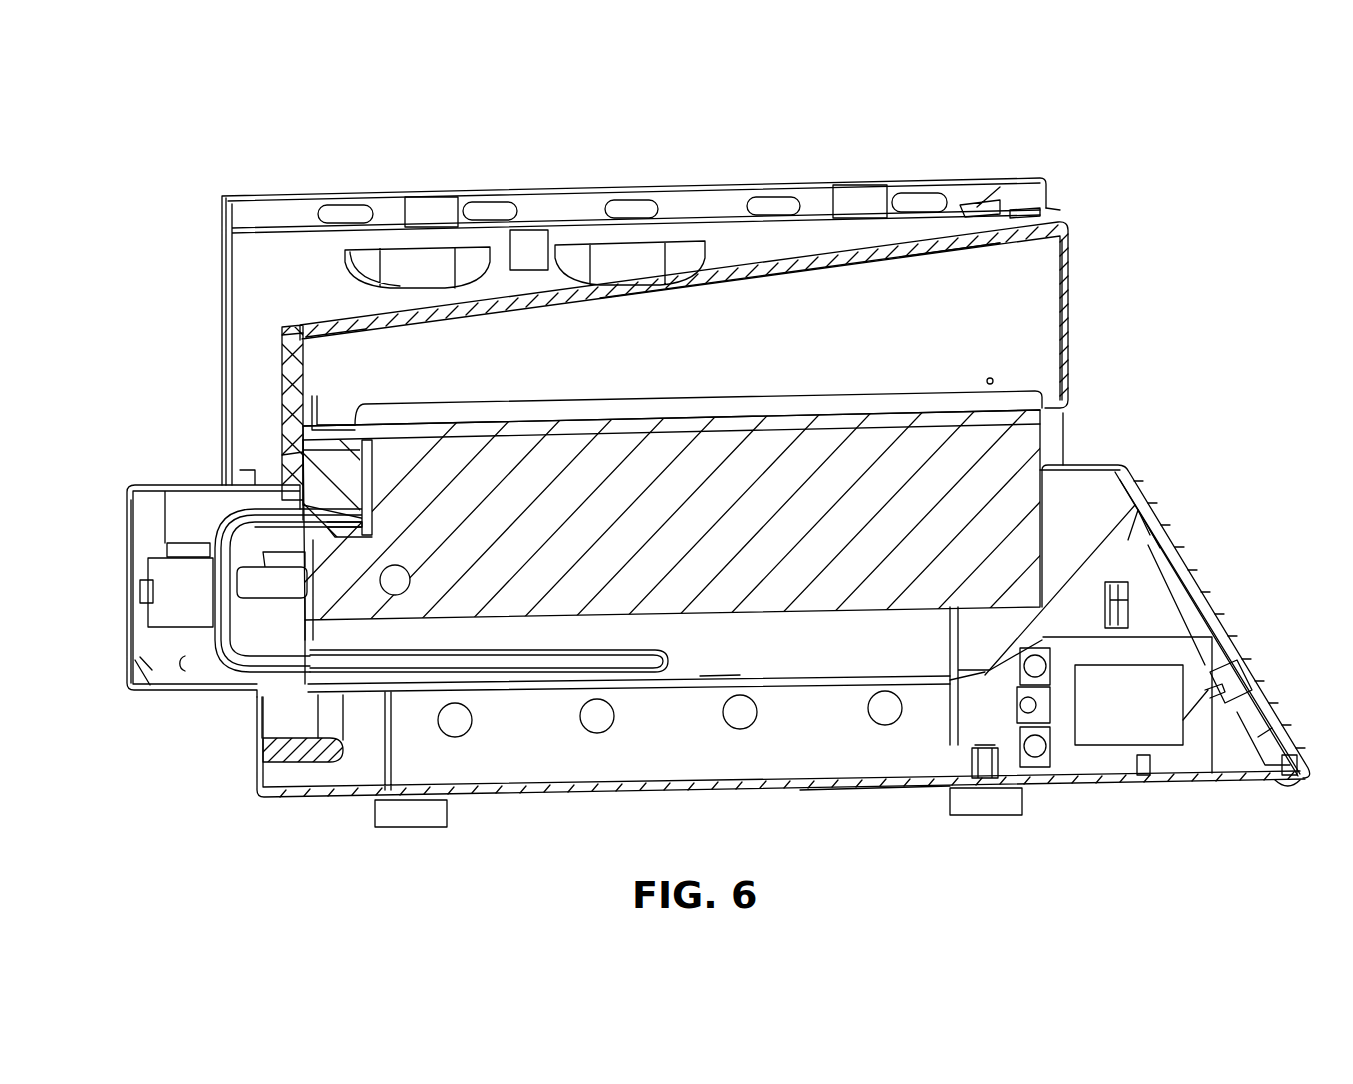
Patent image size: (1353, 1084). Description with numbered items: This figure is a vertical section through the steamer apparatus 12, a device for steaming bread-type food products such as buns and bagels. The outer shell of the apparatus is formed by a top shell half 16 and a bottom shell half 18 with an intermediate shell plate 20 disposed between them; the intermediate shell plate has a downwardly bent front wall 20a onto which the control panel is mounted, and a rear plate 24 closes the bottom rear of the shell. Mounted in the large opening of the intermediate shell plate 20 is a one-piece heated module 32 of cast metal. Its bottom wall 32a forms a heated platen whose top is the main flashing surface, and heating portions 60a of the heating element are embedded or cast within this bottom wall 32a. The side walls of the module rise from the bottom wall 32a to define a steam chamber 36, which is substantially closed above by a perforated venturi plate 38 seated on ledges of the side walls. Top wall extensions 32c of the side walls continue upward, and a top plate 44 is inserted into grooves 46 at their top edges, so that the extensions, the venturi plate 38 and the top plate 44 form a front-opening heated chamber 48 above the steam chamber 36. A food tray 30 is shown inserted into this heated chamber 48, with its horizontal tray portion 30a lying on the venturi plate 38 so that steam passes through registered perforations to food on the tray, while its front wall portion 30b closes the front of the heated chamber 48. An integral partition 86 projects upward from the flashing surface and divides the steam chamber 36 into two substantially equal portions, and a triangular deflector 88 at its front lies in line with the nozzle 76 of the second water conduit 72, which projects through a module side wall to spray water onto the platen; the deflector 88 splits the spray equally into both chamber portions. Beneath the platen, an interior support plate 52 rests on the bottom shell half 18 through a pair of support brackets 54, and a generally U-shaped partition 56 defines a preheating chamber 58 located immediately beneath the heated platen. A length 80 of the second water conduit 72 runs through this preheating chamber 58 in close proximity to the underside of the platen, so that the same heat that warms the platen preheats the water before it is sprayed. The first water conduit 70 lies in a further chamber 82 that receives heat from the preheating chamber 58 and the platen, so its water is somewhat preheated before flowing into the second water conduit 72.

The steamer apparatus 12 is at (1072, 168).
The top shell half 16 is at (222, 200).
The bottom shell half 18 is at (252, 804).
The intermediate shell plate 20 is at (163, 480).
The front wall 20a is at (1155, 570).
The rear plate 24 is at (133, 525).
The food tray 30 is at (1078, 269).
The horizontal tray portion 30a is at (915, 405).
The front wall portion 30b is at (1072, 330).
The one-piece heated module 32 is at (1068, 436).
The bottom wall 32a is at (740, 595).
The top wall extensions 32c is at (290, 360).
The steam chamber 36 is at (323, 380).
The perforated venturi plate 38 is at (765, 425).
The top plate 44 is at (800, 265).
The grooves 46 is at (300, 325).
The heated chamber 48 is at (930, 278).
The interior support plate 52 is at (785, 697).
The support brackets 54 is at (868, 748).
The U-shaped partition 56 is at (968, 753).
The preheating chamber 58 is at (717, 667).
The heating portions 60a is at (400, 592).
The first water conduit 70 is at (294, 778).
The second water conduit 72 is at (203, 633).
The nozzle 76 is at (328, 464).
The length of second water conduit 80 is at (545, 717).
The chamber 82 is at (282, 717).
The partition 86 is at (660, 455).
The triangular deflector 88 is at (345, 455).